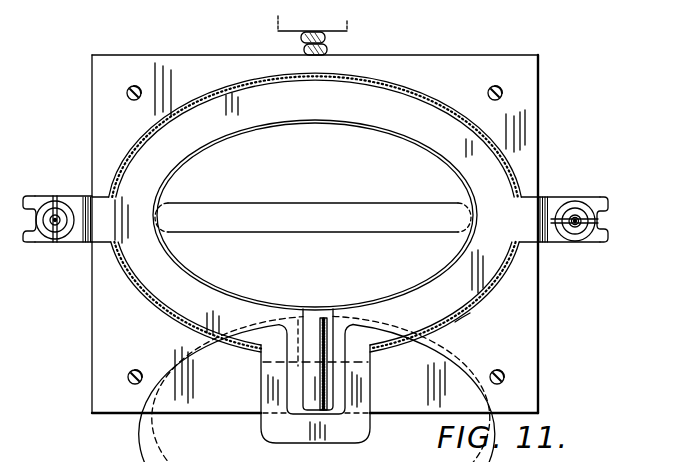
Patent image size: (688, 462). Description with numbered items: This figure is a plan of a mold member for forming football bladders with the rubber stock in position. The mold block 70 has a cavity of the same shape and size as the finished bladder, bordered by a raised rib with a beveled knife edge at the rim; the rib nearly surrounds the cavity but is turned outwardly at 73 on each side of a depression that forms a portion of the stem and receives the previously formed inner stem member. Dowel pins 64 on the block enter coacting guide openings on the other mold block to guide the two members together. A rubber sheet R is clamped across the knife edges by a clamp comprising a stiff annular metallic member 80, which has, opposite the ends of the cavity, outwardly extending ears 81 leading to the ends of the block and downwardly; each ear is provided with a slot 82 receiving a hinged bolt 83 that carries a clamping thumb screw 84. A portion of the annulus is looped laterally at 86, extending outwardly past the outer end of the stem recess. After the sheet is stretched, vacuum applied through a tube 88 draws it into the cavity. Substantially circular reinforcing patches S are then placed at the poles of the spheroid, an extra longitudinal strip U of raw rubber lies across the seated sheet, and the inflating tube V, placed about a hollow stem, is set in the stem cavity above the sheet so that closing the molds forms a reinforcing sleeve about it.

The mold block 70 is at (529, 341).
The dowel pins 64 is at (499, 90).
The vacuum tubes 88 is at (330, 50).
The annular metallic clamp member 80 is at (401, 111).
The rubber sheet R is at (467, 303).
The circular reinforcing patch S is at (167, 199).
The extra longitudinal strip U is at (399, 229).
The lateral loop of annulus 86 is at (265, 392).
The inflating tube V is at (312, 322).
The outwardly turned rib portion 73 is at (338, 318).
The outwardly extending ear 81 is at (531, 212).
The clamping thumb screw 84 is at (57, 240).
The slot 82 is at (608, 228).
The hinged bolt 83 is at (574, 228).